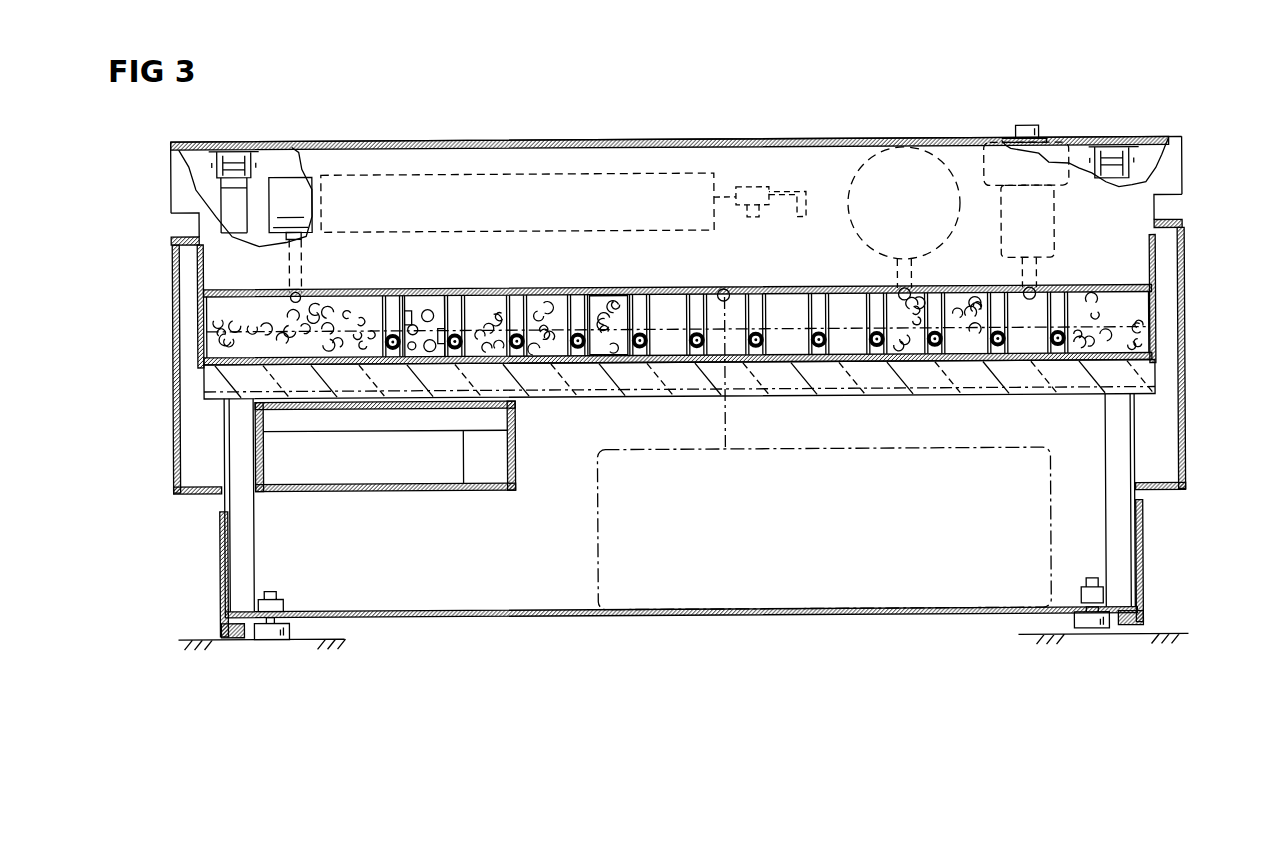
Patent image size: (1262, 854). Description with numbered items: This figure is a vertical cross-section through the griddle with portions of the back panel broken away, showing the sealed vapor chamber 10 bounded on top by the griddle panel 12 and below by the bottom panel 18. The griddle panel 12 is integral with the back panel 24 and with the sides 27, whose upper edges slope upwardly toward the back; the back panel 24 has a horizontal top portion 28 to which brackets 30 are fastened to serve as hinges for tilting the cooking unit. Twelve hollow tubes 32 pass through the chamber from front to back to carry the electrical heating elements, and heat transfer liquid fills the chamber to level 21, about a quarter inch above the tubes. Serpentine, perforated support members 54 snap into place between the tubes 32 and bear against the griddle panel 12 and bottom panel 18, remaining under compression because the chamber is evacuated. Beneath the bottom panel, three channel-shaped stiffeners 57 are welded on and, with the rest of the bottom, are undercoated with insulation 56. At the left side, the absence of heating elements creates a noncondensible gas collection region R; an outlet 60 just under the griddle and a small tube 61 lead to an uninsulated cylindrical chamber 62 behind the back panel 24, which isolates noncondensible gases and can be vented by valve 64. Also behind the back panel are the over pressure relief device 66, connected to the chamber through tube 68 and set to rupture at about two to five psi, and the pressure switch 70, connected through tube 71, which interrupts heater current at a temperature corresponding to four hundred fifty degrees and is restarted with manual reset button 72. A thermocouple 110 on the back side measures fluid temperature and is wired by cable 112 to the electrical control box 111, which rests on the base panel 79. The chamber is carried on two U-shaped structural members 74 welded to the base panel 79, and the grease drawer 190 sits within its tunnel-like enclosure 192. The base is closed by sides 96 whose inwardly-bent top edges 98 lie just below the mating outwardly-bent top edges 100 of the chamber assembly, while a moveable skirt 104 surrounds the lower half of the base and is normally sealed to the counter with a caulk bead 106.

The sealed vapor chamber 10 is at (700, 296).
The griddle panel 12 is at (790, 290).
The bottom panel 18 is at (784, 358).
The heat transfer liquid level 21 is at (607, 307).
The back panel 24 is at (727, 142).
The sides 27 is at (200, 283).
The horizontal top portion 28 is at (522, 142).
The brackets 30 is at (260, 160).
The hollow tubes 32 is at (387, 338).
The support members 54 is at (362, 296).
The insulation 56 is at (900, 397).
The channel-shaped stiffeners 57 is at (608, 397).
The outlet 60 is at (294, 302).
The tube 61 is at (305, 270).
The cylindrical chamber 62 is at (650, 233).
The valve 64 is at (758, 190).
The over pressure relief device 66 is at (880, 153).
The tube 68 is at (893, 277).
The pressure switch 70 is at (985, 153).
The tube 71 is at (1040, 278).
The manual reset button 72 is at (1025, 129).
The U-shaped structural members 74 is at (254, 580).
The base panel 79 is at (550, 620).
The sides 96 is at (174, 411).
The inwardly-bent top edges 98 is at (183, 243).
The outwardly-bent top edges 100 is at (200, 236).
The moveable skirt 104 is at (219, 573).
The caulk bead 106 is at (222, 631).
The thermocouple 110 is at (727, 291).
The electrical control box 111 is at (938, 452).
The cable 112 is at (723, 440).
The grease drawer 190 is at (500, 480).
The tunnel-like enclosure 192 is at (515, 457).
The noncondensible gas collection region R is at (290, 291).